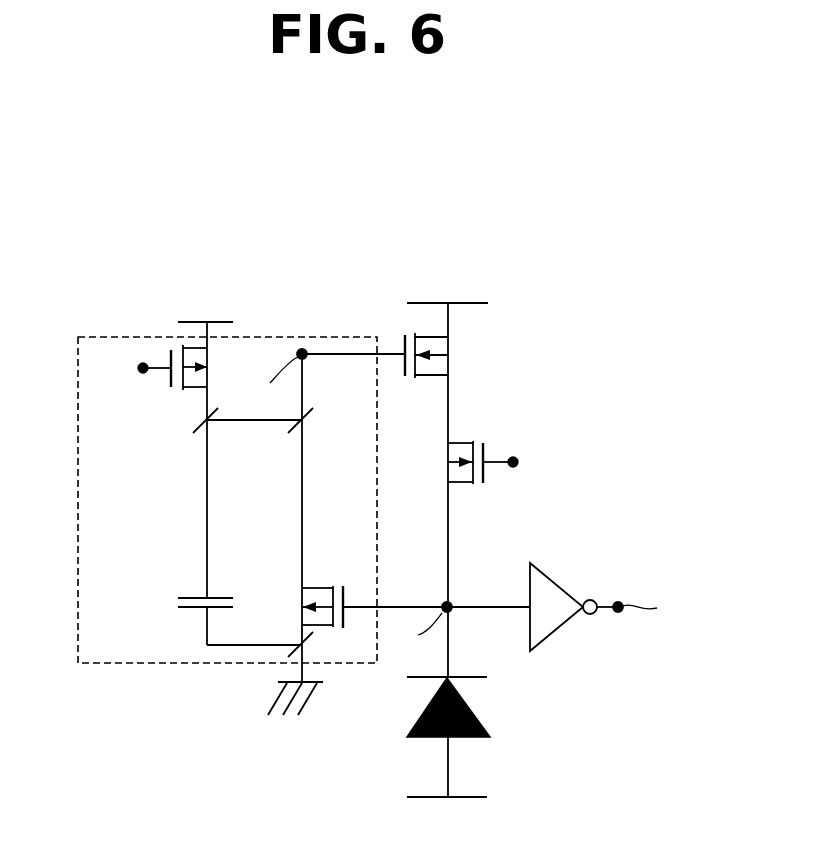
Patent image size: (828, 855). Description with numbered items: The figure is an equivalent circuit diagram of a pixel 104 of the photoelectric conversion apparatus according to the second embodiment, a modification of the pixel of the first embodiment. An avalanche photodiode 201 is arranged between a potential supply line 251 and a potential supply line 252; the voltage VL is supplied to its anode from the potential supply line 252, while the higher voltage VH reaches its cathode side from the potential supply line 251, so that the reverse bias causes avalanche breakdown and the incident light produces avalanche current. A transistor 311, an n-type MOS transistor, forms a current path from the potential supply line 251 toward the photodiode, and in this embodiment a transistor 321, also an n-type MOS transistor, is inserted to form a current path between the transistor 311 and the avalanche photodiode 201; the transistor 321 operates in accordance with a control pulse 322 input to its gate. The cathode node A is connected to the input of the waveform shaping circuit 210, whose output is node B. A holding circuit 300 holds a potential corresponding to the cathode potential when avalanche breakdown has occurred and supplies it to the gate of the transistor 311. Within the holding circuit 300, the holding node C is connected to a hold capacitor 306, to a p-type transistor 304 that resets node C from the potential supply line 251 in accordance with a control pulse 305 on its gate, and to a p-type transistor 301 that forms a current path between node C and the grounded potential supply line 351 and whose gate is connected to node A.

The pixel 104 is at (305, 230).
The avalanche photodiode 201 is at (420, 708).
The waveform shaping circuit 210 is at (553, 596).
The potential supply line 251 is at (186, 320).
The potential supply line 252 is at (477, 797).
The holding circuit 300 is at (265, 335).
The transistor 301 is at (316, 587).
The transistor 304 is at (170, 357).
The control pulse 305 is at (138, 368).
The hold capacitor 306 is at (190, 596).
The transistor 311 is at (402, 347).
The transistor 321 is at (466, 440).
The control pulse 322 is at (519, 462).
The potential supply line 351 is at (280, 681).